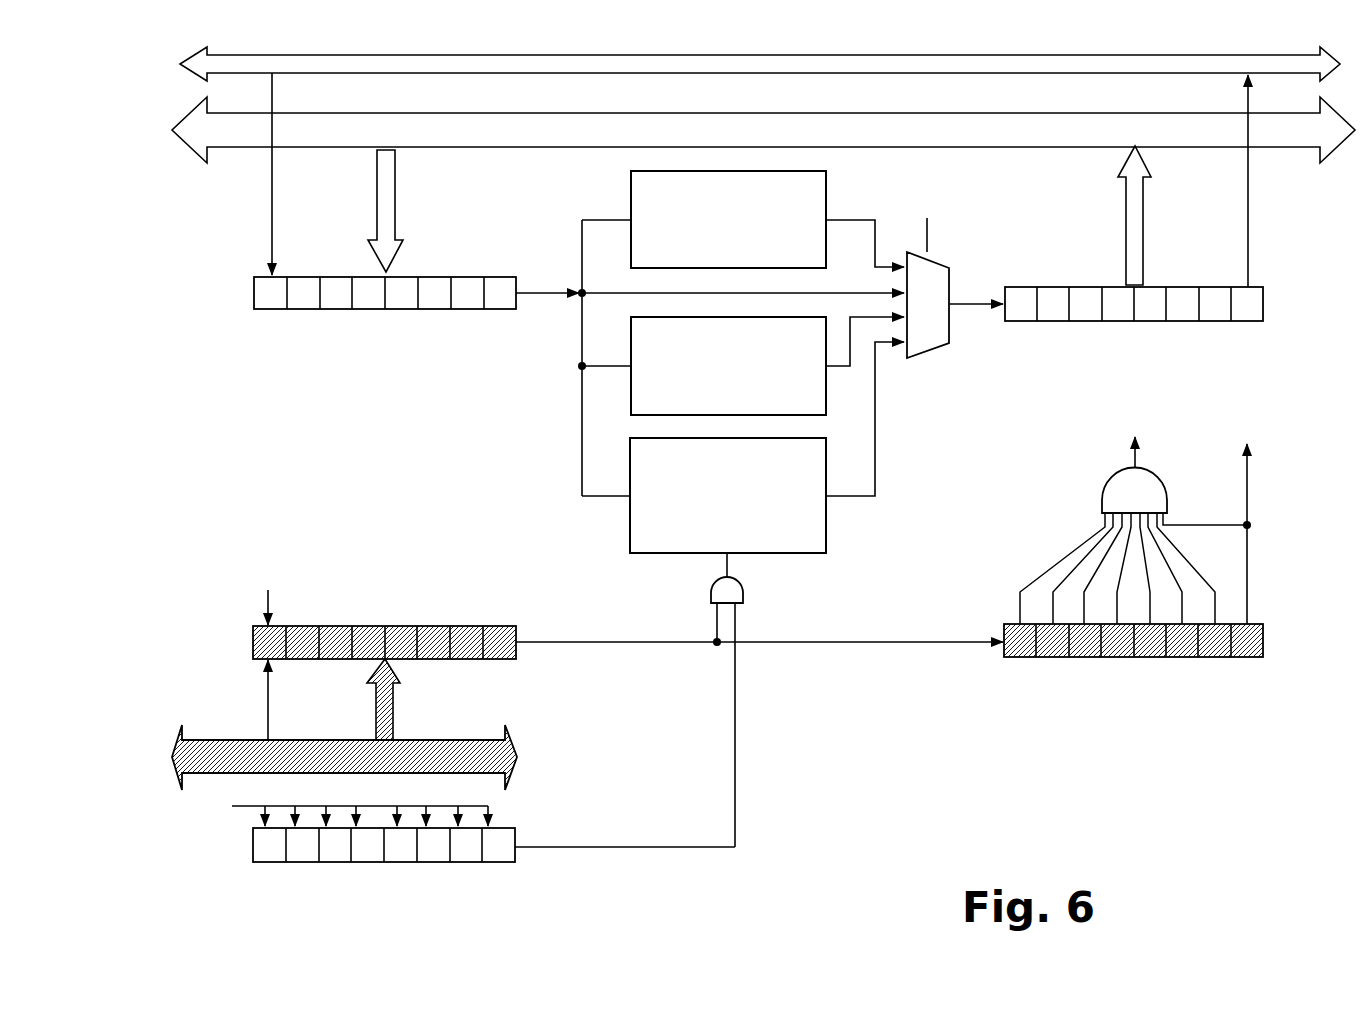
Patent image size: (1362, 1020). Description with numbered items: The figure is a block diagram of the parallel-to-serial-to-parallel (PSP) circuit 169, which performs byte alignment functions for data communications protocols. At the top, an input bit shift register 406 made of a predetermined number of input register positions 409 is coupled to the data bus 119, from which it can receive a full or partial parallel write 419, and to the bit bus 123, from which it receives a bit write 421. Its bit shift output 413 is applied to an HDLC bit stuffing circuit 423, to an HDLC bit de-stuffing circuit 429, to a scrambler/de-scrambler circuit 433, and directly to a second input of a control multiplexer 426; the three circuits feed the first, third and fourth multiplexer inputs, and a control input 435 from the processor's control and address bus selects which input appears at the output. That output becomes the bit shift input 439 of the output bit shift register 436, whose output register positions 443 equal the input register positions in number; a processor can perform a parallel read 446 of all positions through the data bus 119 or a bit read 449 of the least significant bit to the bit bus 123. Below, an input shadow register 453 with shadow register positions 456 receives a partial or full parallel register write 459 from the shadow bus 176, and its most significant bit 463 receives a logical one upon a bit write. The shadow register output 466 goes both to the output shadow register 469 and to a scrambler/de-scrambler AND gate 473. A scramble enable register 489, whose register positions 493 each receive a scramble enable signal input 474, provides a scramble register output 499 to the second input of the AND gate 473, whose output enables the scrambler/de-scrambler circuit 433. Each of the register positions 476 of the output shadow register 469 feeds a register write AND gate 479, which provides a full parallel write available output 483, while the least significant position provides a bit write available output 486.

The bit bus 123 is at (712, 78).
The data bus 119 is at (940, 109).
The bit write 421 is at (282, 227).
The parallel write 419 is at (402, 165).
The input bit shift register 406 is at (474, 237).
The input register positions 409 is at (404, 303).
The bit shift output 413 is at (548, 300).
The HDLC bit stuffing circuit 423 is at (767, 219).
The HDLC bit de-stuffing circuit 429 is at (767, 366).
The scrambler/de-scrambler circuit 433 is at (767, 459).
The control input 435 is at (928, 222).
The control multiplexer 426 is at (931, 362).
The bit shift input 439 is at (974, 296).
The output bit shift register 436 is at (1114, 350).
The output register positions 443 is at (1183, 317).
The parallel read 446 is at (1149, 226).
The bit read 449 is at (1256, 211).
The scrambler/de-scrambler AND gate 473 is at (750, 582).
The shadow register output 466 is at (557, 630).
The input shadow register 453 is at (421, 604).
The shadow register positions 456 is at (437, 653).
The most significant bit 463 is at (279, 727).
The parallel register write 459 is at (401, 733).
The shadow bus 176 is at (498, 730).
The scramble enable signal input 474 is at (342, 810).
The scramble enable register 489 is at (380, 880).
The register positions 493 is at (268, 850).
The scramble register output 499 is at (703, 840).
The output shadow register 469 is at (1097, 679).
The register positions 476 is at (1184, 646).
The register write AND gate 479 is at (1095, 493).
The full parallel write available output 483 is at (1137, 440).
The bit write available output 486 is at (1243, 518).
The parallel-to-serial-to-parallel circuit 169 is at (886, 771).